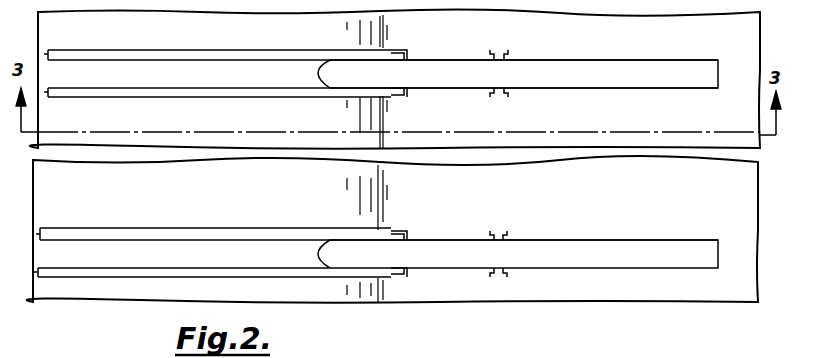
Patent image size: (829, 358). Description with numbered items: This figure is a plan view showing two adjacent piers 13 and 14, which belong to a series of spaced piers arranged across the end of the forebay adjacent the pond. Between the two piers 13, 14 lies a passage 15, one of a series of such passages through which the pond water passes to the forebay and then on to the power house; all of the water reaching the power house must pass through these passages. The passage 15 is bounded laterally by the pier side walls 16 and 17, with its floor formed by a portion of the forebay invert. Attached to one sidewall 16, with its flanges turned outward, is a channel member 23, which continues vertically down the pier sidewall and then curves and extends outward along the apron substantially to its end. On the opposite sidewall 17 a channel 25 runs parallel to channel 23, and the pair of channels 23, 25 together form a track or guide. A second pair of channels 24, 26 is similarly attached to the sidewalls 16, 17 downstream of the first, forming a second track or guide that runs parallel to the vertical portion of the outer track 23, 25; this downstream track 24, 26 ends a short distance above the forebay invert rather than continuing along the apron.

The pier 13 is at (580, 60).
The pier 14 is at (545, 262).
The passage 15 is at (700, 122).
The pier side wall 16 is at (576, 88).
The pier side wall 17 is at (582, 240).
The channel member 23 is at (96, 92).
The channel pair 24 is at (501, 97).
The channel 25 is at (97, 233).
The channel pair 26 is at (500, 231).